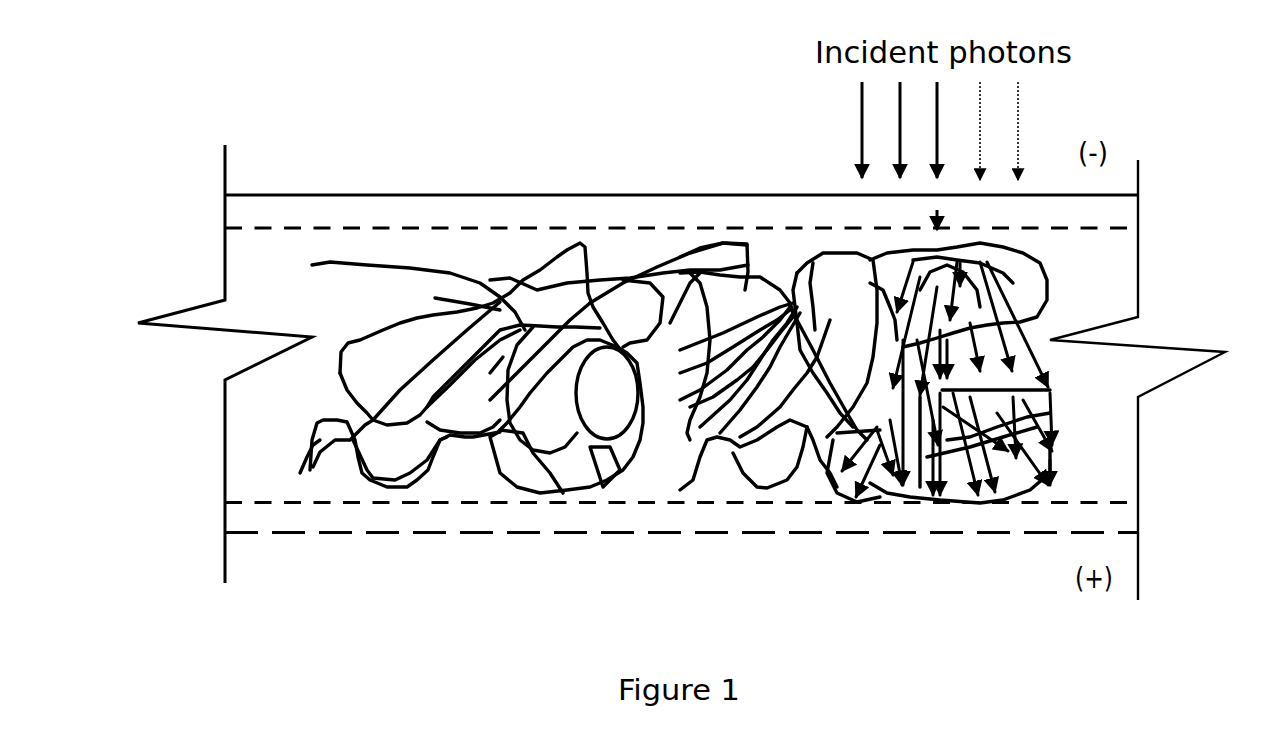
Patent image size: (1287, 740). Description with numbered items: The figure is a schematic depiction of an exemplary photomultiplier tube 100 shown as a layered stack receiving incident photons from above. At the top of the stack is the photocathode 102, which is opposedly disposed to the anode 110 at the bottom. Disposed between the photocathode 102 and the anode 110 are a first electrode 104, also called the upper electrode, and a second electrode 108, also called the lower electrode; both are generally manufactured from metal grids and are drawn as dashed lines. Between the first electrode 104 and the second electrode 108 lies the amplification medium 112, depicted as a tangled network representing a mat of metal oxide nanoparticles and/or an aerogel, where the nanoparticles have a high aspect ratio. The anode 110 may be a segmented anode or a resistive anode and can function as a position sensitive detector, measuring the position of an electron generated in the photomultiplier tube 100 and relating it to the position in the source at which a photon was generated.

The photomultiplier tube 100 is at (1160, 225).
The photocathode 102 is at (267, 192).
The first electrode 104 is at (375, 228).
The second electrode 108 is at (412, 503).
The anode 110 is at (558, 532).
The amplification medium 112 is at (1045, 270).